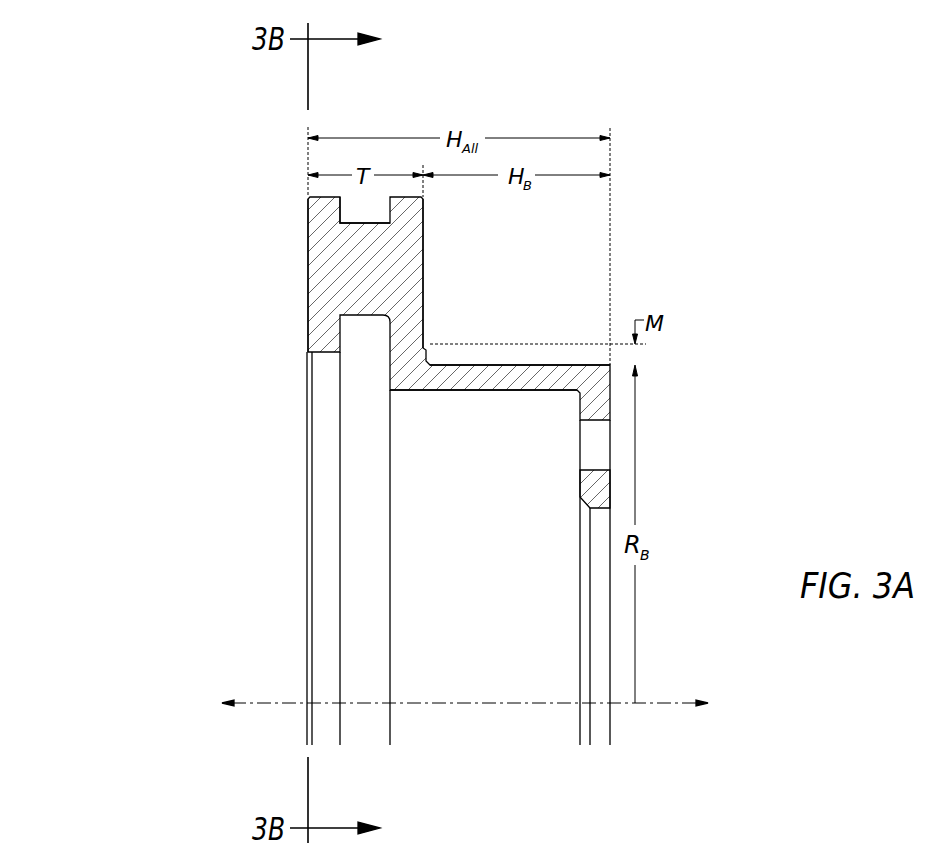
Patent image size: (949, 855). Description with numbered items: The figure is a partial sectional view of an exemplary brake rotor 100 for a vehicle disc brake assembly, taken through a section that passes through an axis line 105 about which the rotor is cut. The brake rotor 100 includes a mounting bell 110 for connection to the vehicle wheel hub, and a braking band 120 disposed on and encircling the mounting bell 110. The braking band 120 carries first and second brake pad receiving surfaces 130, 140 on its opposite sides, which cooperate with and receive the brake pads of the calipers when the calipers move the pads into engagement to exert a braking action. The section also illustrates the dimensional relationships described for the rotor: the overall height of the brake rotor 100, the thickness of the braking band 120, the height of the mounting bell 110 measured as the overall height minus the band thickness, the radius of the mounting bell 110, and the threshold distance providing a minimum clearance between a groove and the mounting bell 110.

The brake rotor 100 is at (108, 127).
The axle / hub bore 105 is at (470, 704).
The mounting bell 110 is at (489, 365).
The braking band 120 is at (423, 198).
The first brake pad receiving surface 130 is at (434, 246).
The second brake pad receiving surface 140 is at (300, 228).